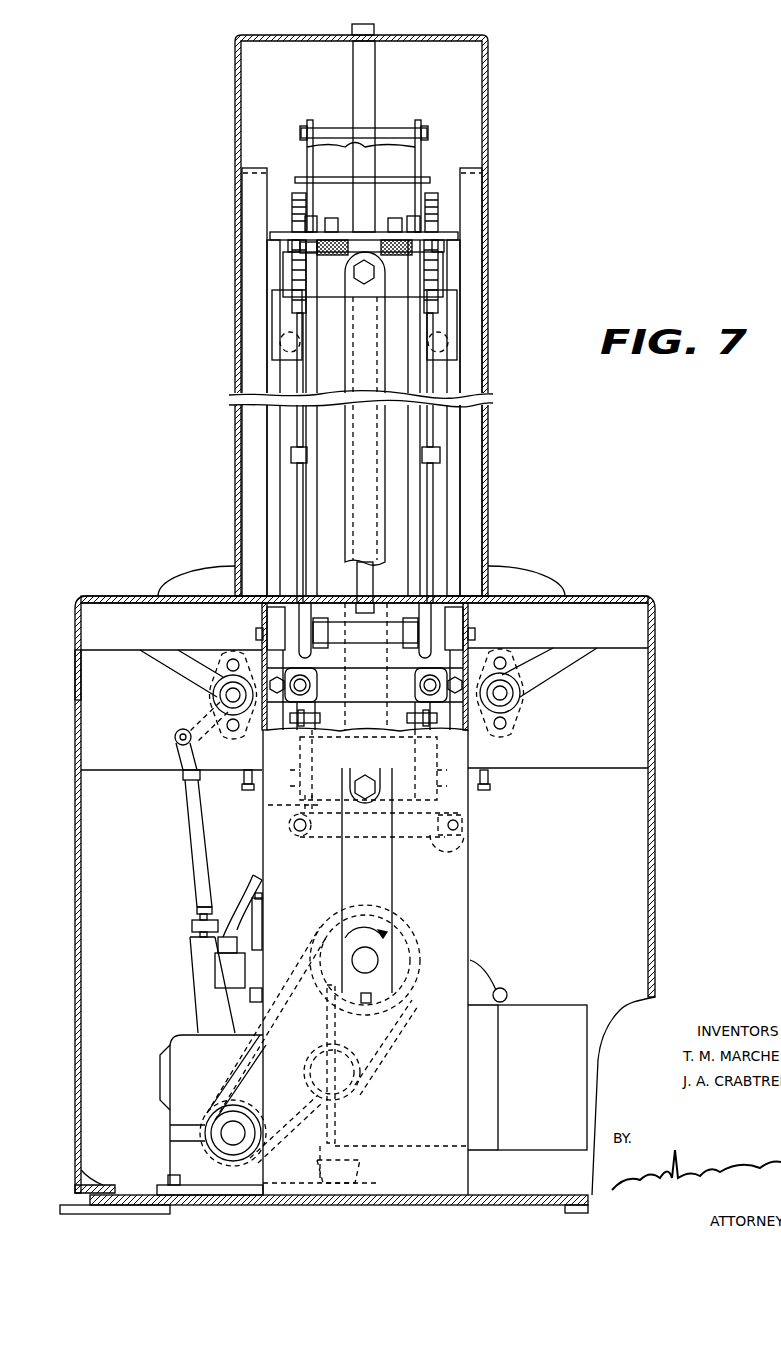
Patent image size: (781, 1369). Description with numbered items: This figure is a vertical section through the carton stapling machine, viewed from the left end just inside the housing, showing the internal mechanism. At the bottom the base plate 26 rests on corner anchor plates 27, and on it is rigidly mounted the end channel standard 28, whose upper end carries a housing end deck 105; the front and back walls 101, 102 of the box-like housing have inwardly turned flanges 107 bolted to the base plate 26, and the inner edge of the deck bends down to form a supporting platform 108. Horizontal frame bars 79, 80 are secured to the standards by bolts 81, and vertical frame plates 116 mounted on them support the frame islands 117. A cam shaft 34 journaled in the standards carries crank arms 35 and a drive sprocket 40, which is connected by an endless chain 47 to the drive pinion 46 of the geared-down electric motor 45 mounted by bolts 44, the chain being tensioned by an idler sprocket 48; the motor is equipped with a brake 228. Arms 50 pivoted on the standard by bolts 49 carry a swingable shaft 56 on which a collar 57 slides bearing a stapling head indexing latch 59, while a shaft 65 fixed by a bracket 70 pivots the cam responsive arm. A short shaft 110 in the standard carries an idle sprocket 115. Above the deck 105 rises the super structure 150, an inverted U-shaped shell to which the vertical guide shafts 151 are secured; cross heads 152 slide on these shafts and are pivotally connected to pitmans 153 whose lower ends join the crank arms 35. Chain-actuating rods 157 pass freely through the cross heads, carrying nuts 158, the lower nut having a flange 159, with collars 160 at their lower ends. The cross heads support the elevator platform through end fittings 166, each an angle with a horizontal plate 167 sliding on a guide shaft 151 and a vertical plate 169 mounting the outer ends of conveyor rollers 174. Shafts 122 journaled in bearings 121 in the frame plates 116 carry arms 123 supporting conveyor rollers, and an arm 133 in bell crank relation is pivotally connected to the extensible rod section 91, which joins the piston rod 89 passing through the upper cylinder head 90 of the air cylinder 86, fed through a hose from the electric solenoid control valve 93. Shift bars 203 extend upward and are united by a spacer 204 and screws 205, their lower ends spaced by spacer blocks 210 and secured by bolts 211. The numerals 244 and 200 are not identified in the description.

The super structure 150 is at (497, 52).
The vertical guide shafts 151 is at (363, 79).
The spacer 204 is at (392, 128).
The screws 205 is at (300, 131).
The shift bars 203 is at (361, 157).
The horizontal plate 167 is at (452, 232).
The nuts 158 is at (290, 242).
The flange 159 is at (316, 250).
The bolt 244 is at (333, 252).
The cross heads 152 is at (443, 270).
The pitmans 153 is at (372, 506).
The vertical plates 169 is at (450, 303).
The end fittings 166 is at (462, 320).
The conveyor rollers 174 is at (280, 334).
The chain-actuating rods 157 is at (297, 422).
The collars 160 is at (291, 455).
The lower tie rods 200 is at (298, 481).
The frame islands 117 is at (183, 589).
The end decks 105 is at (603, 597).
The front wall 101 is at (656, 714).
The back wall 102 is at (77, 673).
The flanges 107 is at (103, 1190).
The supporting platforms 108 is at (110, 648).
The vertical frame plates 116 is at (116, 765).
The end channel standard 28 is at (460, 895).
The shafts 122 is at (215, 697).
The bearings 121 is at (240, 655).
The arms 123 is at (165, 662).
The arm 133 is at (175, 725).
The short shafts 110 is at (452, 632).
The idle sprockets 115 is at (410, 648).
The spacer blocks 210 is at (405, 715).
The bolts 211 is at (292, 722).
The crank arms 35 is at (392, 863).
The bolts 81 is at (242, 770).
The horizontal frame bar 80 is at (242, 784).
The horizontal frame bar 79 is at (482, 788).
The stapling head indexing latch 59 is at (268, 806).
The collar 57 is at (289, 825).
The shaft 56 is at (292, 835).
The bolts 49 is at (458, 825).
The arms 50 is at (468, 848).
The extensible rod section 91 is at (195, 840).
The piston rod 89 is at (197, 913).
The upper cylinder head 90 is at (192, 928).
The air cylinder 86 is at (205, 998).
The electric solenoid control valve 93 is at (225, 972).
The cam shaft 34 is at (380, 958).
The drive sprocket 40 is at (283, 993).
The idler sprocket 48 is at (360, 1072).
The drive pinion 46 is at (221, 1133).
The endless chain 47 is at (247, 1057).
The electric motor 45 is at (180, 1065).
The bolts 44 is at (170, 1175).
The bracket 70 is at (480, 977).
The shaft 65 is at (507, 993).
The brake 228 is at (550, 1013).
The base plate 26 is at (248, 1205).
The corner anchor plates 27 is at (65, 1210).